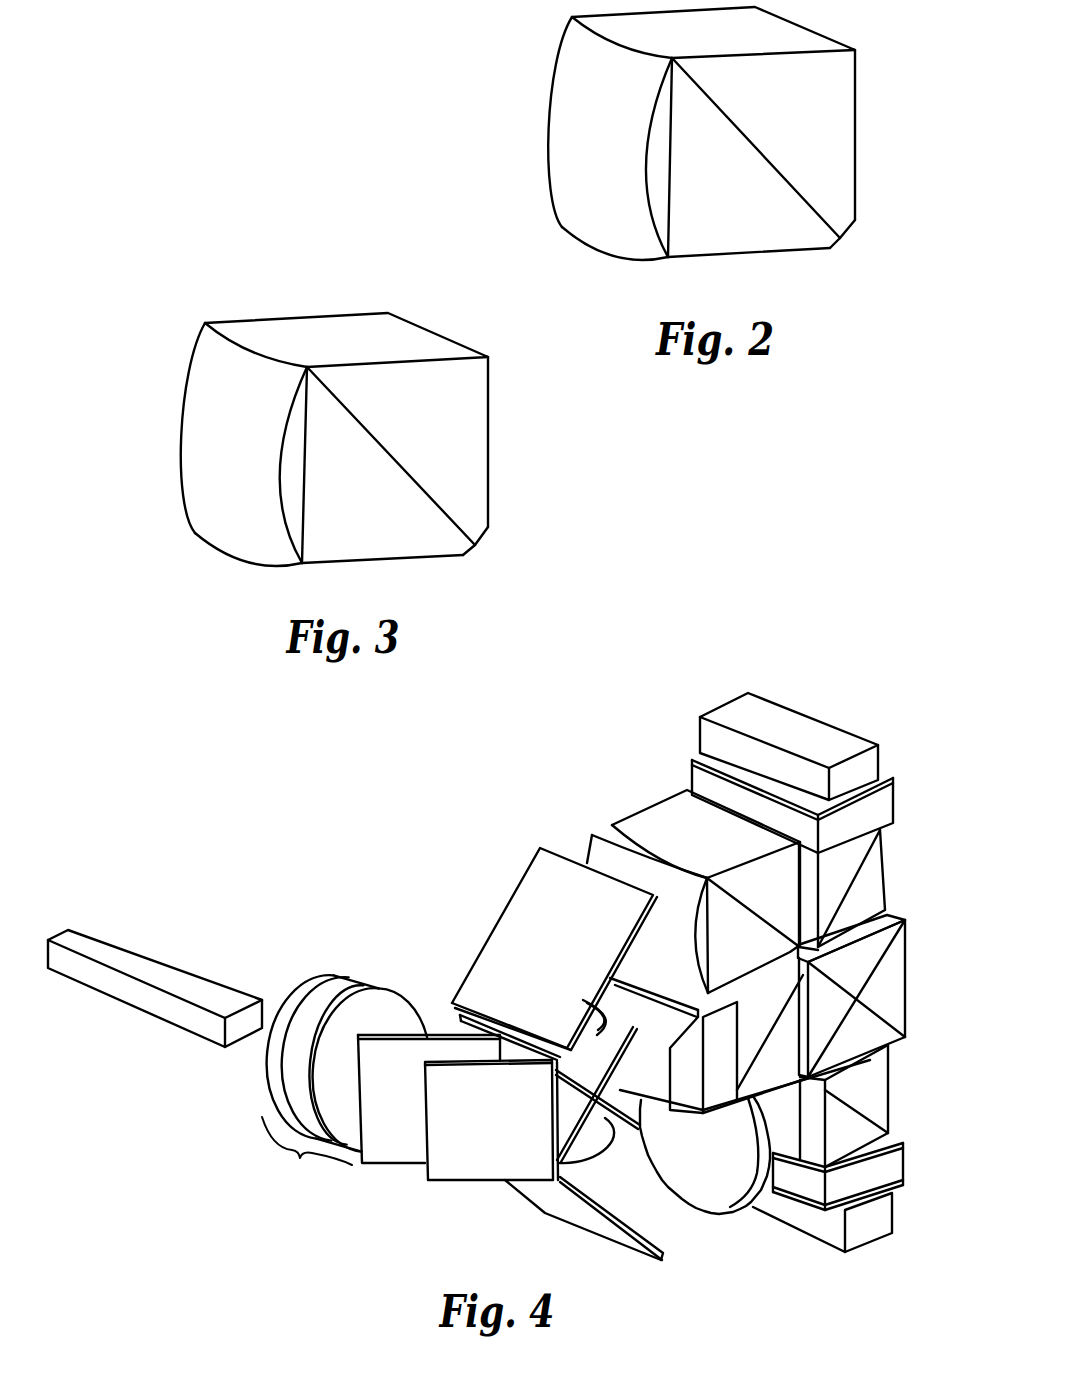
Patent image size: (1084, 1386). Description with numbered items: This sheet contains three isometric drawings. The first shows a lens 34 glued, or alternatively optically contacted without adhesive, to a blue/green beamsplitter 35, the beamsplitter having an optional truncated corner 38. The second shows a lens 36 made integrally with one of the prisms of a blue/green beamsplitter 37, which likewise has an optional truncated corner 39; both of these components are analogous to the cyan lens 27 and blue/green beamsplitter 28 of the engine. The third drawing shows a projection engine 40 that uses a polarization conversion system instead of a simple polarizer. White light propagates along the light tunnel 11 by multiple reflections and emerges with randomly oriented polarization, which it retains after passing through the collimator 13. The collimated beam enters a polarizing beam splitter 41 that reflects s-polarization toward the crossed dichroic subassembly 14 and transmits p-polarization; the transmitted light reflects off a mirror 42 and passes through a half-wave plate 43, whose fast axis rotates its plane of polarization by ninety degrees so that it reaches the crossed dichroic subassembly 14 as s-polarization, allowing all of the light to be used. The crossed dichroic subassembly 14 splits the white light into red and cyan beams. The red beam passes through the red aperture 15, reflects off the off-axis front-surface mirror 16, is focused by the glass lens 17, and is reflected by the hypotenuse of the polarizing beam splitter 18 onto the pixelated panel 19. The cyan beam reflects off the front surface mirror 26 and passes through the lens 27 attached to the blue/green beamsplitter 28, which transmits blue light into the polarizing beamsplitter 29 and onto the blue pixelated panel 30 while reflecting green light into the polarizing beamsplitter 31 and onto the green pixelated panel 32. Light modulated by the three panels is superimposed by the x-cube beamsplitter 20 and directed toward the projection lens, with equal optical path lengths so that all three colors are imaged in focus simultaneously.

In FIG. 4, the light tunnel 11 is at (130, 958).
In FIG. 4, the collimator 13 is at (344, 1084).
In FIG. 4, the crossed dichroic subassembly 14 is at (622, 1118).
In FIG. 4, the red aperture 15 is at (598, 1165).
In FIG. 4, the front-surface mirror 16 is at (590, 1222).
In FIG. 4, the lens 17 is at (712, 1190).
In FIG. 4, the polarizing beam splitter 18 is at (855, 1110).
In FIG. 4, the pixelated panel 19 is at (870, 1228).
In FIG. 4, the x-cube beamsplitter 20 is at (875, 977).
In FIG. 4, the front surface mirror 26 is at (512, 928).
In FIG. 4, the lens 27 is at (630, 858).
In FIG. 4, the blue/green beamsplitter 28 is at (668, 823).
In FIG. 4, the polarizing beamsplitter 29 is at (853, 880).
In FIG. 4, the blue pixelated panel 30 is at (868, 765).
In FIG. 4, the polarizing beamsplitter 31 is at (760, 1037).
In FIG. 4, the green pixelated panel 32 is at (718, 1088).
In FIG. 2, the lens 34 is at (558, 113).
In FIG. 2, the blue/green beamsplitter 35 is at (742, 242).
In FIG. 3, the lens 36 is at (192, 418).
In FIG. 3, the blue/green beamsplitter 37 is at (375, 548).
In FIG. 2, the truncated corner 38 is at (845, 230).
In FIG. 3, the truncated corner 39 is at (480, 538).
In FIG. 4, the projection engine 40 is at (262, 862).
In FIG. 4, the polarizing beam splitter 41 is at (397, 1150).
In FIG. 4, the mirror 42 is at (468, 1162).
In FIG. 4, the half-wave plate 43 is at (447, 1030).